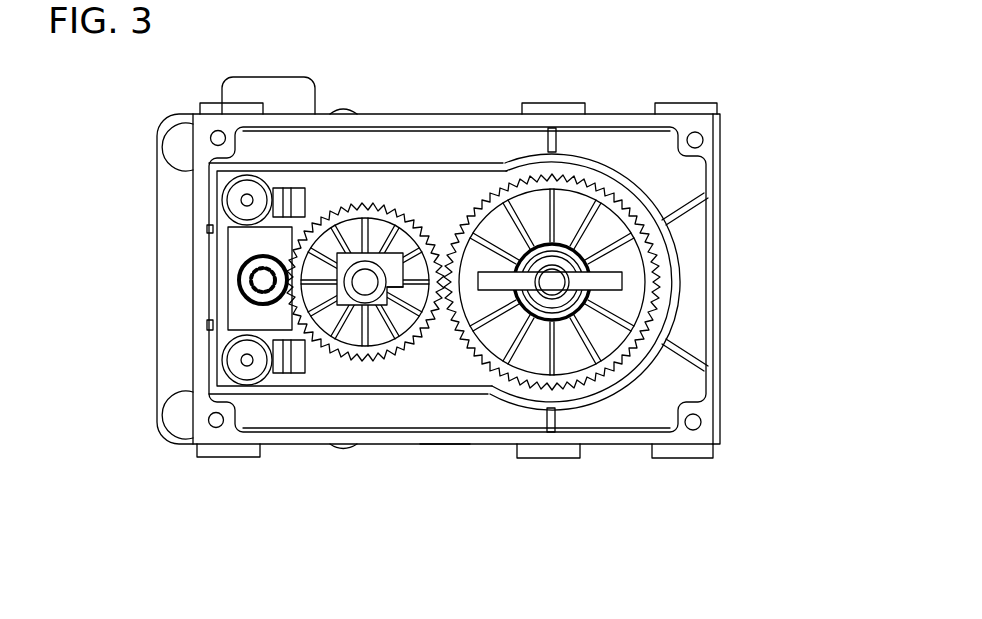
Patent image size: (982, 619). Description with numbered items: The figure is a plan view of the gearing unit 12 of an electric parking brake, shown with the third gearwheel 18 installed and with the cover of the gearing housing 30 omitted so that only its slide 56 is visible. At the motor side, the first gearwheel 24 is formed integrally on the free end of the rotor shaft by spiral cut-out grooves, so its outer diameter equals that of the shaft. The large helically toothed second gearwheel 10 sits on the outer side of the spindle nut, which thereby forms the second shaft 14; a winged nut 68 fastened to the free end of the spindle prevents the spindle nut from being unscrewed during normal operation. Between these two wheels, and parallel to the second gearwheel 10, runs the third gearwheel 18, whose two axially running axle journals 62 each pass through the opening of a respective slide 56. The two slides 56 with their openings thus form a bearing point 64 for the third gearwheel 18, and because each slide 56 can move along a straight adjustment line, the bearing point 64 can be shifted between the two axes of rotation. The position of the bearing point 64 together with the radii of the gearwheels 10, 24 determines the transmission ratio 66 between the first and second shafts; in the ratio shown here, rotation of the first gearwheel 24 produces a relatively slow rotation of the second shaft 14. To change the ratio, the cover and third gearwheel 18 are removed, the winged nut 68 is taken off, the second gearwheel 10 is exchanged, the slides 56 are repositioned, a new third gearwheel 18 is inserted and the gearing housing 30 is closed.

The second gearwheel 10 is at (568, 170).
The gearing unit 12 is at (725, 68).
The second shaft 14 is at (660, 358).
The third gearwheel 18 is at (357, 215).
The first gearwheel 24 is at (242, 293).
The gearing housing 30 is at (723, 143).
The slide 56 is at (386, 286).
The axle journal 62 is at (363, 288).
The bearing point 64 is at (380, 262).
The transmission ratio 66 is at (446, 485).
The winged nut 68 is at (600, 279).